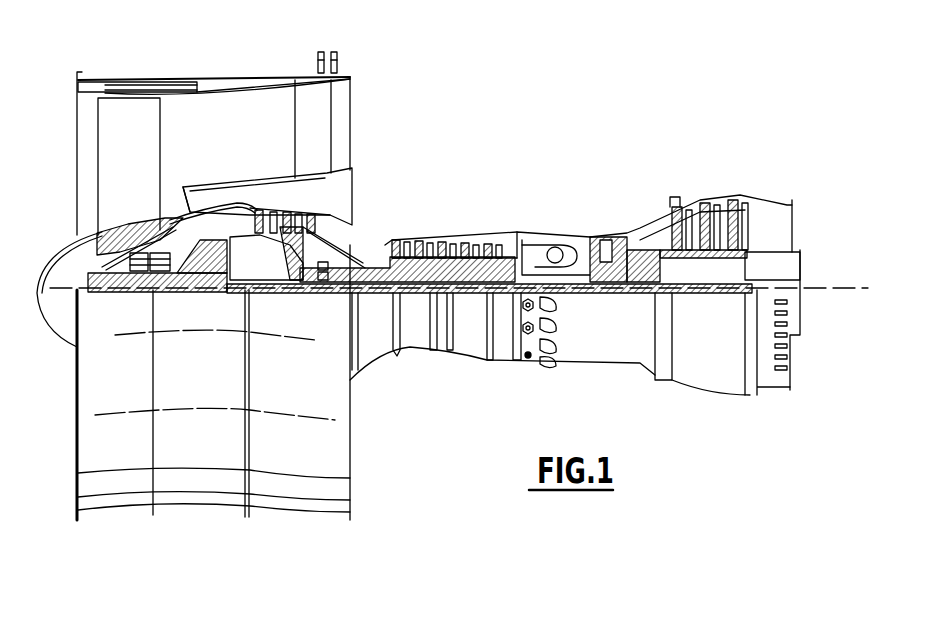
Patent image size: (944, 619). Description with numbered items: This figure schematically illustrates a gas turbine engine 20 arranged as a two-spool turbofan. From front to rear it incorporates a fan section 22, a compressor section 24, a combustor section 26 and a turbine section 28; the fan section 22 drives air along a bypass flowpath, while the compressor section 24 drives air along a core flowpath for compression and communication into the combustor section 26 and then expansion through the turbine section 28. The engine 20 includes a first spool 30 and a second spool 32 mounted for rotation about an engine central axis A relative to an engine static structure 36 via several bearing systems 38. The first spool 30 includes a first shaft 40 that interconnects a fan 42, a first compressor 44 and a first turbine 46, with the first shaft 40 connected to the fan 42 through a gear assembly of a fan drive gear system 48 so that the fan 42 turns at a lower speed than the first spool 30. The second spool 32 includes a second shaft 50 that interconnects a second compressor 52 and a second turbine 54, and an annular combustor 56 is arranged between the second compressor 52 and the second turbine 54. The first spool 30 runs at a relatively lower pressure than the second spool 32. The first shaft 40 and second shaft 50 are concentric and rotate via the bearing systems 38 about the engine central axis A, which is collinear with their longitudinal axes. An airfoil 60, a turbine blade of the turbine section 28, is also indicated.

The gas turbine engine 20 is at (612, 77).
The fan section 22 is at (160, 70).
The compressor section 24 is at (392, 215).
The combustor section 26 is at (562, 208).
The turbine section 28 is at (675, 180).
The first spool 30 is at (470, 300).
The second spool 32 is at (510, 240).
The engine static structure 36 is at (503, 362).
The bearing systems 38 is at (322, 285).
The first shaft 40 is at (363, 292).
The fan 42 is at (150, 172).
The first compressor 44 is at (333, 182).
The first turbine 46 is at (707, 200).
The fan drive gear system 48 is at (221, 283).
The second shaft 50 is at (566, 295).
The second compressor 52 is at (452, 235).
The second turbine 54 is at (610, 238).
The annular combustor 56 is at (549, 228).
The airfoil 60 is at (755, 205).
The engine central axis A is at (862, 288).